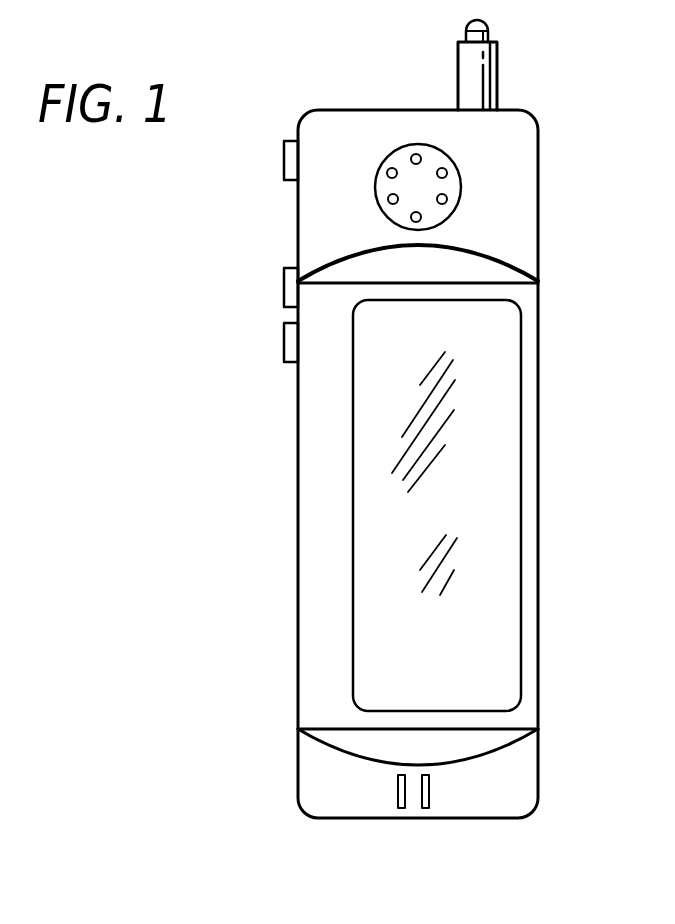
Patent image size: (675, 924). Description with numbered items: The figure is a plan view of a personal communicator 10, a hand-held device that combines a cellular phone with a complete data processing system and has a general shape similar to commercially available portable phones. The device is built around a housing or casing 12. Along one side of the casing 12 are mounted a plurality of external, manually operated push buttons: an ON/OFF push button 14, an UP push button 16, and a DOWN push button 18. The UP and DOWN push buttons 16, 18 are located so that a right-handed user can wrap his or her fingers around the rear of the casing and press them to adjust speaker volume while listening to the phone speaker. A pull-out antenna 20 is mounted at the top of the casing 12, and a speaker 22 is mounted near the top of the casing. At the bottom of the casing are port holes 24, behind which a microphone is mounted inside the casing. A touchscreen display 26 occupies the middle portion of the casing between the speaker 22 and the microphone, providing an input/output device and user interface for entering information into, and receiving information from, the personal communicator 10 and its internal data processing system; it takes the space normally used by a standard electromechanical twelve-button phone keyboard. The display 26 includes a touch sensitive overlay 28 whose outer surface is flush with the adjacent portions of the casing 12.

The personal communicator 10 is at (190, 338).
The housing 12 is at (297, 542).
The ON/OFF push button 14 is at (284, 158).
The UP push button 16 is at (284, 297).
The DOWN push button 18 is at (284, 333).
The pull-out antenna 20 is at (497, 80).
The speaker 22 is at (385, 183).
The port holes 24 is at (423, 792).
The touchscreen display 26 is at (520, 570).
The touch sensitive overlay 28 is at (442, 664).